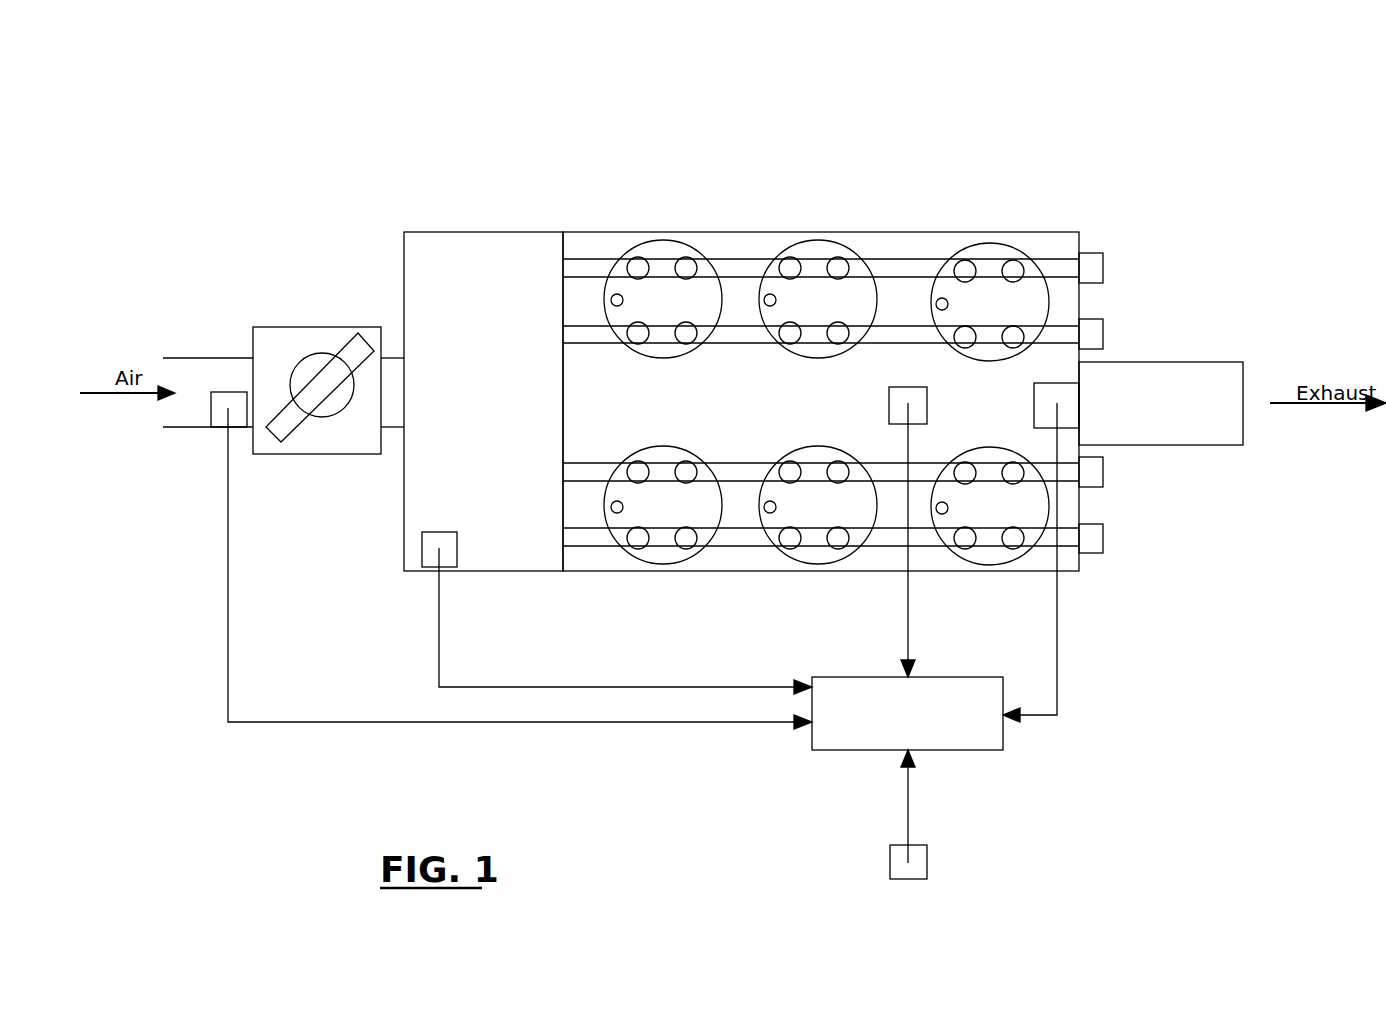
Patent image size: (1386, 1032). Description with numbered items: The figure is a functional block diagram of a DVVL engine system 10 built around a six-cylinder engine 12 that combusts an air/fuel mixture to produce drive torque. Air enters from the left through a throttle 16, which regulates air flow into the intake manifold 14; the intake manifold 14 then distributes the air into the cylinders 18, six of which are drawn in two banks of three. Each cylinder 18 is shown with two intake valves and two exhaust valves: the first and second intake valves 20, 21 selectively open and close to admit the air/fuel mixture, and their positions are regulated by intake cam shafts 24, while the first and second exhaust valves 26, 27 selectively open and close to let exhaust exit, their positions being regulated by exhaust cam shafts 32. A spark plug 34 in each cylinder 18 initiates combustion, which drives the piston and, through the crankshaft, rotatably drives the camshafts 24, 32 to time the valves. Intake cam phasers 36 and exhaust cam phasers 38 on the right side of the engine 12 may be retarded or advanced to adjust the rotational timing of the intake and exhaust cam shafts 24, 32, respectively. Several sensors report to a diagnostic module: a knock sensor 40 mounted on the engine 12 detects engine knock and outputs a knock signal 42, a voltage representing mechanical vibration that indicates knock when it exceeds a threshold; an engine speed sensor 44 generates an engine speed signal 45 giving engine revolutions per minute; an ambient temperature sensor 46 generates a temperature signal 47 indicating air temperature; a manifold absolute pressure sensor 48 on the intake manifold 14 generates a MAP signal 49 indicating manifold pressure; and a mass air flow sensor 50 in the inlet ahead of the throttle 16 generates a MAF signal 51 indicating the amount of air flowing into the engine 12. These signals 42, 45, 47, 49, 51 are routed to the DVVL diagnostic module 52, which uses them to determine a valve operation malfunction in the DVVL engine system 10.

The DVVL engine system 10 is at (792, 117).
The engine 12 is at (817, 232).
The intake manifold 14 is at (470, 232).
The throttle 16 is at (322, 327).
The cylinders 18 is at (607, 532).
The first intake valve 20 is at (638, 331).
The second intake valve 21 is at (686, 333).
The intake cam shafts 24 is at (748, 330).
The first exhaust valve 26 is at (638, 267).
The second exhaust valve 27 is at (686, 267).
The exhaust cam shafts 32 is at (563, 271).
The spark plug 34 is at (611, 508).
The intake cam phasers 36 is at (1103, 268).
The exhaust cam phasers 38 is at (1103, 340).
The knock sensor 40 is at (908, 403).
The knock signal 42 is at (908, 624).
The engine speed sensor 44 is at (1079, 405).
The engine speed signal 45 is at (1057, 664).
The ambient temperature sensor 46 is at (890, 880).
The temperature signal 47 is at (908, 818).
The manifold absolute pressure sensor 48 is at (404, 571).
The MAP signal 49 is at (439, 672).
The mass air flow sensor 50 is at (211, 430).
The MAF signal 51 is at (228, 722).
The DVVL diagnostic module 52 is at (1003, 750).